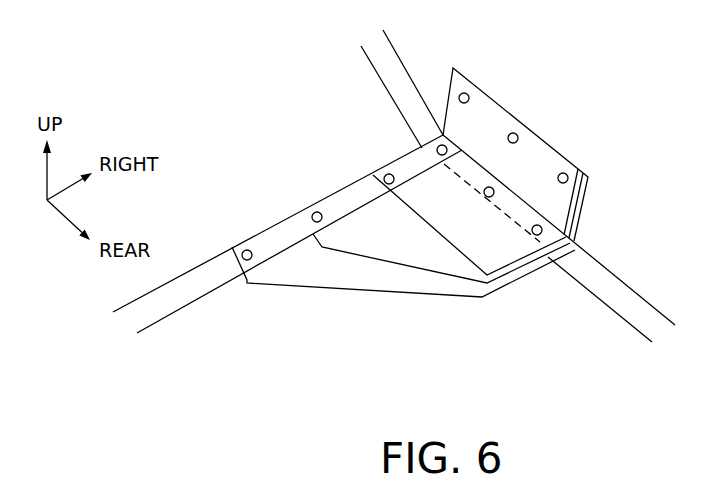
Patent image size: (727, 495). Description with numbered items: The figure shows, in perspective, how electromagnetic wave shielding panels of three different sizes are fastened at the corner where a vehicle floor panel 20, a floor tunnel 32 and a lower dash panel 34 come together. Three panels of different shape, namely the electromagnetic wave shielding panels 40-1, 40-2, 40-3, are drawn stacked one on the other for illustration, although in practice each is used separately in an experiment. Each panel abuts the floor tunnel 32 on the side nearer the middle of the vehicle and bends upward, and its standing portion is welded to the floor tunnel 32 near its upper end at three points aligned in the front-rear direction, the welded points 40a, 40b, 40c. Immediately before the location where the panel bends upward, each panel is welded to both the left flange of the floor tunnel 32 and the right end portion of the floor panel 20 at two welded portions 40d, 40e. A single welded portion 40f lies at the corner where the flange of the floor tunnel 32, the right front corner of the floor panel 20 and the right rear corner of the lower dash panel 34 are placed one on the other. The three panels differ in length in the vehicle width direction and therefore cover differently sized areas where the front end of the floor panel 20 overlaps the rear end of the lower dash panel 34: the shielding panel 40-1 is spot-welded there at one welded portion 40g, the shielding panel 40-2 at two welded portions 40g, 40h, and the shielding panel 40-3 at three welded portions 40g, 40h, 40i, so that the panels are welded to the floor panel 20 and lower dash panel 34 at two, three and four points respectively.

The floor panel 20 is at (341, 404).
The floor tunnel 32 is at (649, 220).
The lower dash panel 34 is at (254, 113).
The electromagnetic wave shielding panel 40-1 is at (465, 237).
The electromagnetic wave shielding panel 40-2 is at (385, 243).
The electromagnetic wave shielding panel 40-3 is at (280, 273).
The welded point 40a is at (462, 93).
The welded point 40b is at (514, 133).
The welded point 40c is at (564, 173).
The welded portion 40d is at (488, 198).
The welded portion 40e is at (538, 236).
The welded portion 40f is at (436, 148).
The welded portion 40g is at (384, 175).
The welded portion 40h is at (313, 212).
The welded portion 40i is at (244, 250).